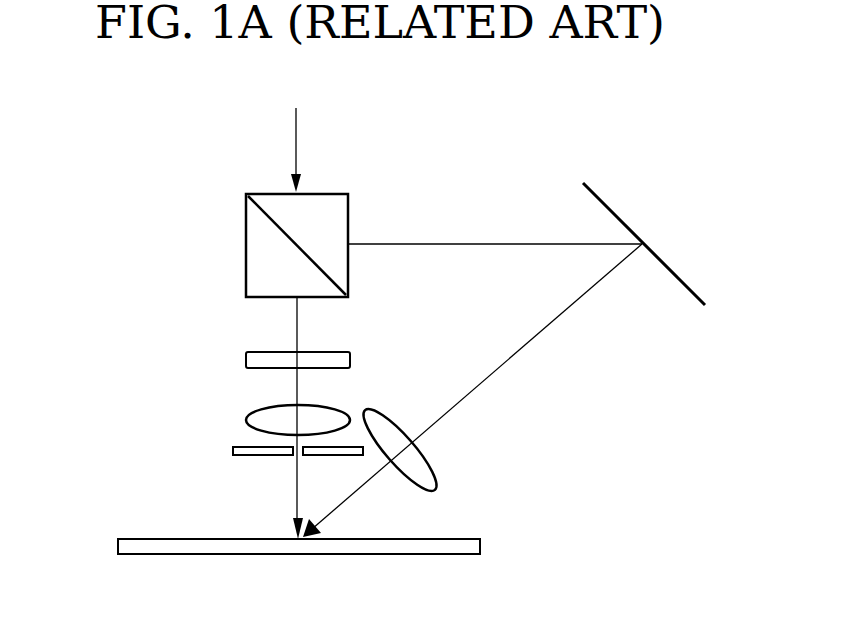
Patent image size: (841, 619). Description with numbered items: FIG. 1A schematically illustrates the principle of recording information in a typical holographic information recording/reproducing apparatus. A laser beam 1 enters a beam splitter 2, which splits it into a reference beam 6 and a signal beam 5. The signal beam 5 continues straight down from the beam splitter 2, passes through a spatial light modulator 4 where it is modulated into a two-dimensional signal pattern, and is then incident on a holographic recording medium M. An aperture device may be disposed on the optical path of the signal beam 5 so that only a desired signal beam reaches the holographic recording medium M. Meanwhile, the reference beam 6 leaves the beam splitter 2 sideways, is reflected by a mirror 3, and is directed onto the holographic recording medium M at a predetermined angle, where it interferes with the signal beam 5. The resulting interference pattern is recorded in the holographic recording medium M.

The laser beam 1 is at (296, 143).
The beam splitter 2 is at (246, 245).
The mirror 3 is at (670, 267).
The spatial light modulator 4 is at (246, 360).
The signal beam 5 is at (297, 490).
The reference beam 6 is at (433, 243).
The holographic recording medium M is at (118, 548).